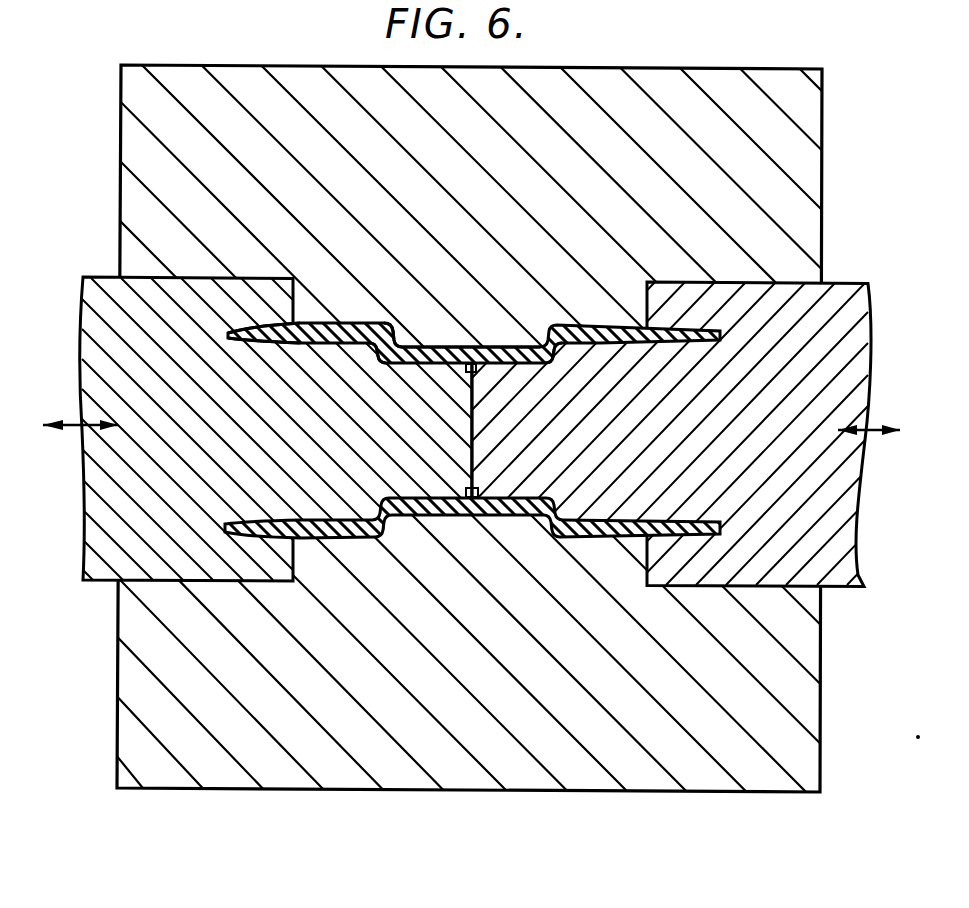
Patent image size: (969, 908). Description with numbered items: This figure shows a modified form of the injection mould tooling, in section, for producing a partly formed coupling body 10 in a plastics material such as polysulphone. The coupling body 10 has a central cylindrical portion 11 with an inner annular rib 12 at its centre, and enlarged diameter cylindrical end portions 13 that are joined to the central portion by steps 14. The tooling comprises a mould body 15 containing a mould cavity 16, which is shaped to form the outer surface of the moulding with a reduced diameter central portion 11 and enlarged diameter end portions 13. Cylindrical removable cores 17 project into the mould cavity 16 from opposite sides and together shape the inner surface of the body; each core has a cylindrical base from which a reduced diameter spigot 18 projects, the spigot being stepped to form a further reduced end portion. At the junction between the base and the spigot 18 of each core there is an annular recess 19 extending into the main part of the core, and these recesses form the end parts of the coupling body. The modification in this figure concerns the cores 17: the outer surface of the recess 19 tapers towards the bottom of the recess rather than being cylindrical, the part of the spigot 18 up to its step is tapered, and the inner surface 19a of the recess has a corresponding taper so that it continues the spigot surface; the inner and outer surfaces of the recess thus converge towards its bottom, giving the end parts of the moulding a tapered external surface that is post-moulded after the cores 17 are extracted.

The coupling body 10 is at (453, 338).
The central cylindrical portion 11 is at (493, 343).
The inner annular rib 12 is at (472, 367).
The enlarged diameter cylindrical end portions 13 is at (352, 322).
The steps 14 is at (390, 323).
The mould body 15 is at (138, 93).
The mould cavity 16 is at (433, 343).
The removable cores 17 is at (88, 292).
The spigot 18 is at (422, 480).
The annular recess 19 is at (371, 271).
The inner surface of recess 19a is at (250, 330).